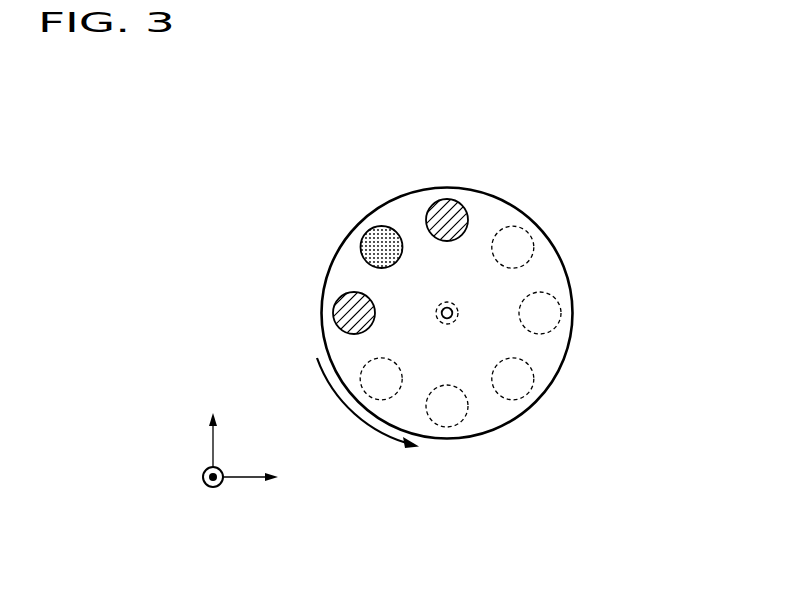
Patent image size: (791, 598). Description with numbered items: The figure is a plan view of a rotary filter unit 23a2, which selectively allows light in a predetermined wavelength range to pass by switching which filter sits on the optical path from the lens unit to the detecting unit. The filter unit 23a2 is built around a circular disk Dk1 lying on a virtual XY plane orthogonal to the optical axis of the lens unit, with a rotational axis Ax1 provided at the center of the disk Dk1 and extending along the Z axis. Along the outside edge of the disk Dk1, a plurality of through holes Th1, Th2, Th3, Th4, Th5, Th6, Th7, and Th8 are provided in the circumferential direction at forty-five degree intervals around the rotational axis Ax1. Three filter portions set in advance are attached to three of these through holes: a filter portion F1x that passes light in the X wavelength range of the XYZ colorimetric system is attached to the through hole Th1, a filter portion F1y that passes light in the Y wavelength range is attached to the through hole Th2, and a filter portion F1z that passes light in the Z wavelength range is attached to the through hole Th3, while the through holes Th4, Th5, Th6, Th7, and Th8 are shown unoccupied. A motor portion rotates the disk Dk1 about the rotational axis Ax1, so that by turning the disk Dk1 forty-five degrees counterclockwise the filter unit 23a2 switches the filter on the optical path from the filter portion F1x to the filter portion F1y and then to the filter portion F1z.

The filter unit 23a2 is at (373, 146).
The circular disk Dk1 is at (550, 350).
The rotational axis Ax1 is at (448, 306).
The through hole Th1 is at (337, 320).
The through hole Th2 is at (358, 235).
The through hole Th3 is at (446, 200).
The through hole Th4 is at (533, 233).
The through hole Th5 is at (561, 312).
The through hole Th6 is at (527, 392).
The through hole Th7 is at (447, 427).
The through hole Th8 is at (364, 363).
The filter portion F1x is at (340, 309).
The filter portion F1y is at (367, 237).
The filter portion F1z is at (452, 200).